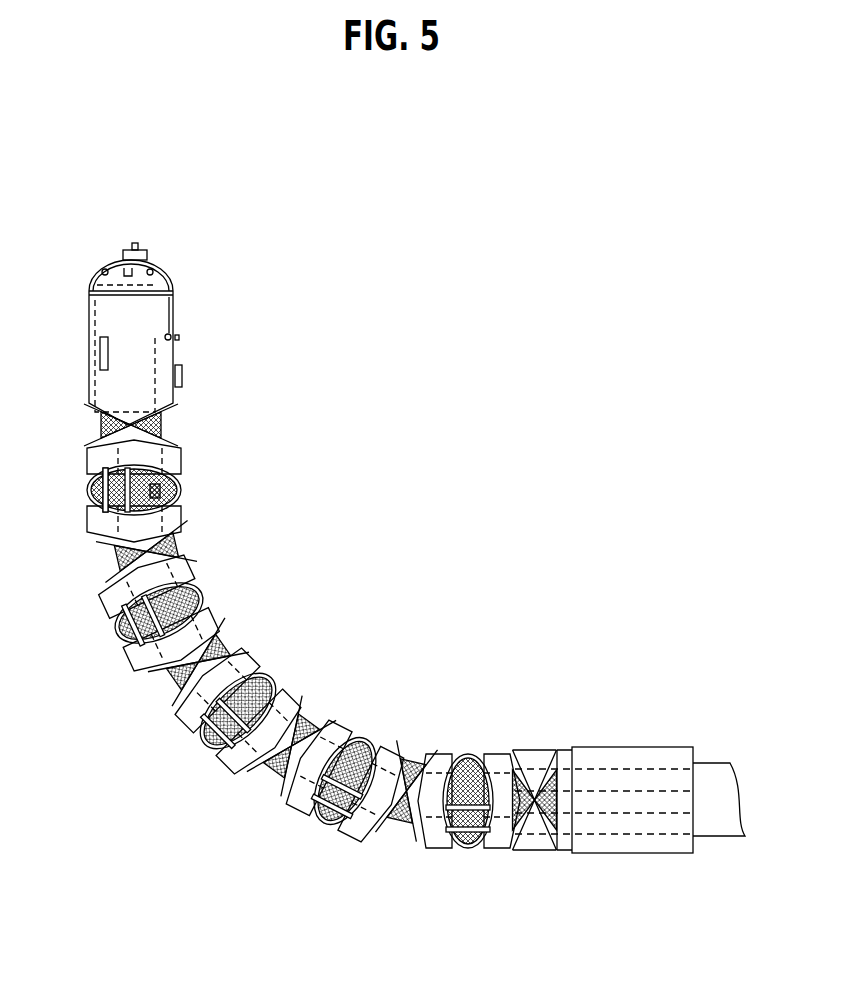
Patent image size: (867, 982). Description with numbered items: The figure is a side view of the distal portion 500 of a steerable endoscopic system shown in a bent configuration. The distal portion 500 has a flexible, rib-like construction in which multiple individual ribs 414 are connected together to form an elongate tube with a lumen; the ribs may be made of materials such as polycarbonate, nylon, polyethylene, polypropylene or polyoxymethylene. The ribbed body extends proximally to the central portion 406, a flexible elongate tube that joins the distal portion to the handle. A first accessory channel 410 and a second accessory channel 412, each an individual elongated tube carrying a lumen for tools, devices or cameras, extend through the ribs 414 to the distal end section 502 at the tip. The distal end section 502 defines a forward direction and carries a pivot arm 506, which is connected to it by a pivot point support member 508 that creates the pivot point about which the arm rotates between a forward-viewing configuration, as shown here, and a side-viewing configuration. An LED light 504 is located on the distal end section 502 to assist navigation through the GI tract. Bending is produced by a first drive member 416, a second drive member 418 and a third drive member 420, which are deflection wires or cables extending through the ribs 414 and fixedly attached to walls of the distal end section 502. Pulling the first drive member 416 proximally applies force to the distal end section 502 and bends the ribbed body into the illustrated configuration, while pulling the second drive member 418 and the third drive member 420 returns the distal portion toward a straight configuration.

The distal portion 500 is at (300, 310).
The distal end section 502 is at (108, 322).
The LED light 504 is at (128, 254).
The pivot arm 506 is at (160, 391).
The pivot point support member 508 is at (156, 316).
The central portion 406 is at (708, 766).
The first accessory channel 410 is at (414, 762).
The second accessory channel 412 is at (409, 806).
The ribs 414 is at (204, 572).
The first drive member 416 is at (182, 544).
The second drive member 418 is at (104, 491).
The third drive member 420 is at (160, 493).